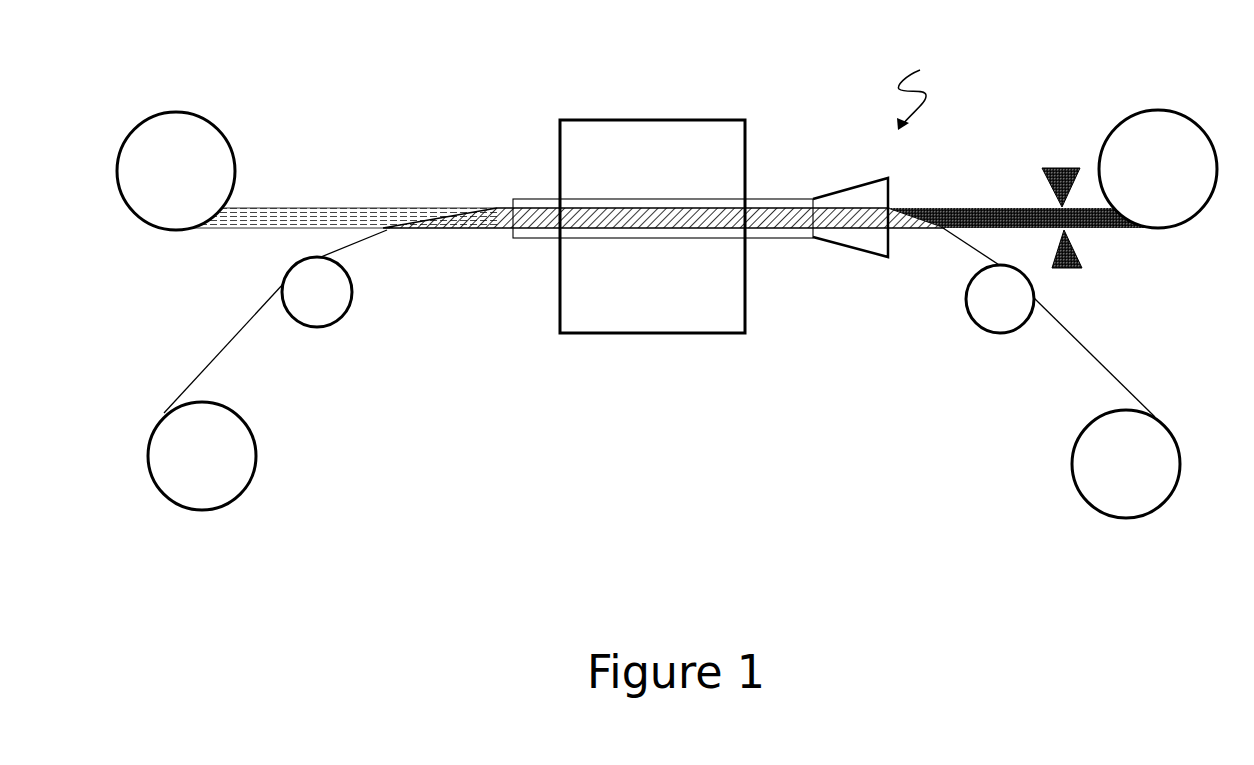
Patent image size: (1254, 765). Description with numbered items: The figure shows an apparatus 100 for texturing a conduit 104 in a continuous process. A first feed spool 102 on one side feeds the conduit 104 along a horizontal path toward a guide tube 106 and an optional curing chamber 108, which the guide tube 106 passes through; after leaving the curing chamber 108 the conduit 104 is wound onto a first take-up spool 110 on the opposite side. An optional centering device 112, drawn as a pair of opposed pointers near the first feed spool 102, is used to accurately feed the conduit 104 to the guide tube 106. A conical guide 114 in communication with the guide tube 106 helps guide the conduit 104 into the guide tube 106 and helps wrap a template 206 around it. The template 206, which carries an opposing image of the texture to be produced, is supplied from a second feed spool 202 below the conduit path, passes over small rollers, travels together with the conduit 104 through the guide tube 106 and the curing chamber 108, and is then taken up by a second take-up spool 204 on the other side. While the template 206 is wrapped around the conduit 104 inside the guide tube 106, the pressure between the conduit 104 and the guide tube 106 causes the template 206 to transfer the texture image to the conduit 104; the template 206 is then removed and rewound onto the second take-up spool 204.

The apparatus 100 is at (936, 90).
The first feed spool 102 is at (1130, 140).
The conduit 104 is at (958, 220).
The guide tube 106 is at (795, 239).
The curing chamber 108 is at (658, 313).
The first take-up spool 110 is at (177, 133).
The centering device 112 is at (1070, 257).
The conical guide 114 is at (891, 247).
The second feed spool 202 is at (1100, 497).
The second take-up spool 204 is at (217, 488).
The template 206 is at (233, 333).